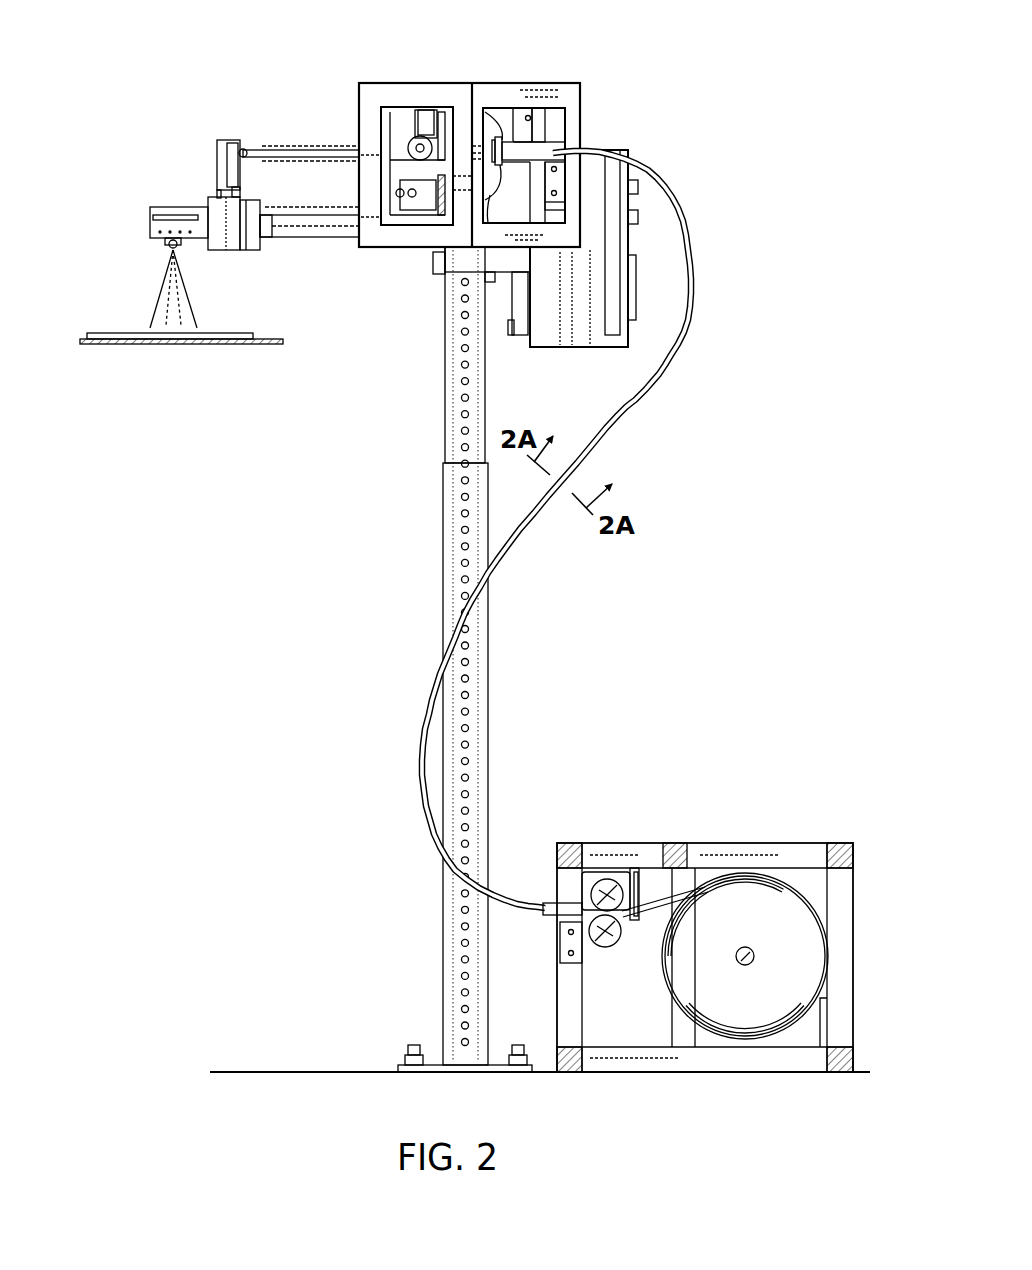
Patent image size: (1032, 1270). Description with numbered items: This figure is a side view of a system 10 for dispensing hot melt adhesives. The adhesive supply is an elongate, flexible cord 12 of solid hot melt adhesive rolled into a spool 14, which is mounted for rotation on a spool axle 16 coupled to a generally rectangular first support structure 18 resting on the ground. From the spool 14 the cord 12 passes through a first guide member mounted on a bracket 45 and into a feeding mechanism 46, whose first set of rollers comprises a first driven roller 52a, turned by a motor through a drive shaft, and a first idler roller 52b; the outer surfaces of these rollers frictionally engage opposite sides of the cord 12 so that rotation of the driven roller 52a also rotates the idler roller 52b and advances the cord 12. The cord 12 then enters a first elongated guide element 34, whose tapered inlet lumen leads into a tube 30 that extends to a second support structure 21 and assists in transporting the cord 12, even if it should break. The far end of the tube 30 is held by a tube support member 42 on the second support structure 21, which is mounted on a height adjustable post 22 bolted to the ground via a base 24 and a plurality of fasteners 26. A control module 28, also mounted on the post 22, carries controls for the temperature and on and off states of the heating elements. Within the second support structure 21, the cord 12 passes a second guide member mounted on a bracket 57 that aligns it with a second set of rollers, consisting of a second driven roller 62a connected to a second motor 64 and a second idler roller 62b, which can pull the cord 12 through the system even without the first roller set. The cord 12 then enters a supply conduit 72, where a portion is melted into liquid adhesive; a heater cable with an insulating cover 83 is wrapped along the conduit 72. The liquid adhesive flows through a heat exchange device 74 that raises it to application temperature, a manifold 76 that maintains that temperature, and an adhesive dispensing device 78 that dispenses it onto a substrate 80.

The system 10 is at (789, 77).
The cord 12 is at (658, 908).
The spool 14 is at (770, 882).
The spool axle 16 is at (752, 952).
The first support structure 18 is at (724, 842).
The second support structure 21 is at (357, 90).
The height adjustable post 22 is at (488, 716).
The base 24 is at (452, 1073).
The fasteners 26 is at (404, 1050).
The control module 28 is at (627, 290).
The tube 30 is at (623, 416).
The first elongated guide element 34 is at (548, 903).
The tube support member 42 is at (527, 135).
The bracket 45 is at (638, 890).
The feeding mechanism 46 is at (609, 952).
The first driven roller 52a is at (605, 879).
The first idler roller 52b is at (595, 942).
The bracket 57 is at (553, 147).
The second driven roller 62a is at (490, 138).
The second idler roller 62b is at (494, 168).
The second motor 64 is at (420, 138).
The supply conduit 72 is at (286, 150).
The heat exchange device 74 is at (220, 140).
The manifold 76 is at (148, 222).
The adhesive dispensing device 78 is at (172, 205).
The substrate 80 is at (120, 333).
The insulating cover 83 is at (328, 160).